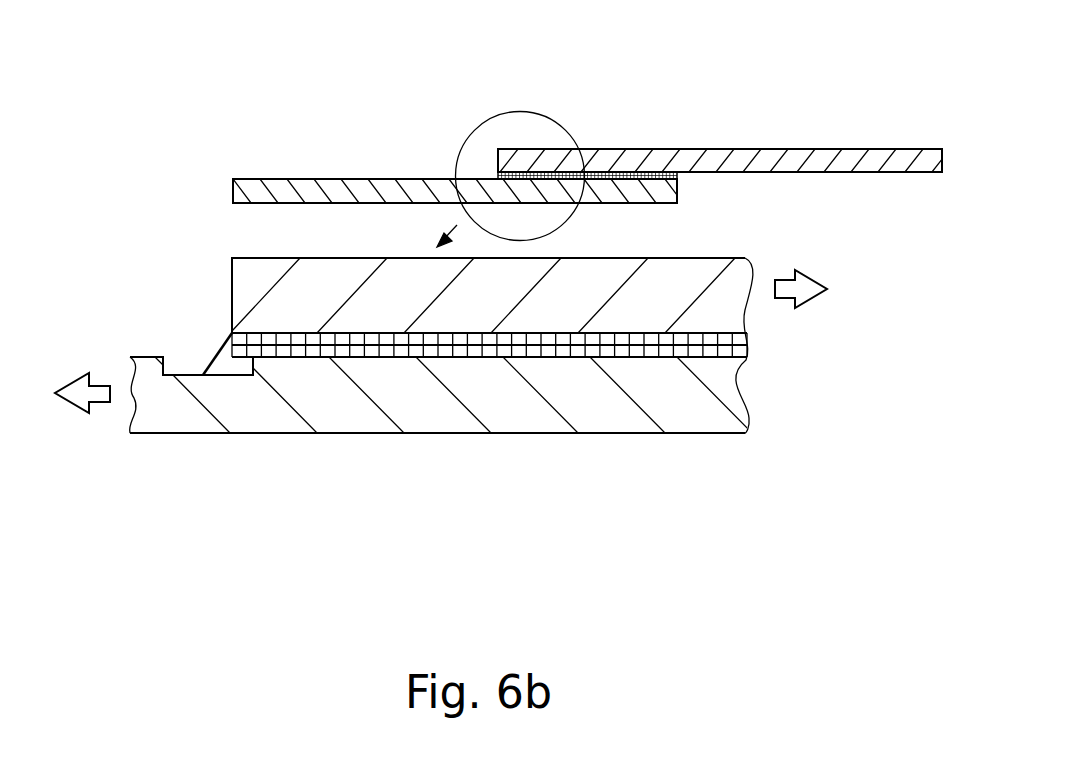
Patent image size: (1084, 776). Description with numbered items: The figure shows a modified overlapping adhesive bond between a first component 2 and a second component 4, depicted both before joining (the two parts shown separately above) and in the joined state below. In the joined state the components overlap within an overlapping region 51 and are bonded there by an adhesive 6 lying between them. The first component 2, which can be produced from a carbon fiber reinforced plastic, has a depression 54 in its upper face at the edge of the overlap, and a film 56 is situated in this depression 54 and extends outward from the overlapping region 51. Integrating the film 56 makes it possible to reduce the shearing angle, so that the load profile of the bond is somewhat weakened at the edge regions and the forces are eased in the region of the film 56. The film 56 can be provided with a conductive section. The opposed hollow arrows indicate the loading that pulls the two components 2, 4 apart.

The first component 2 is at (331, 186).
The second component 4 is at (822, 156).
The adhesive layer 6 is at (615, 169).
The overlapping region 51 is at (767, 572).
The depression 54 is at (192, 379).
The film 56 is at (230, 367).